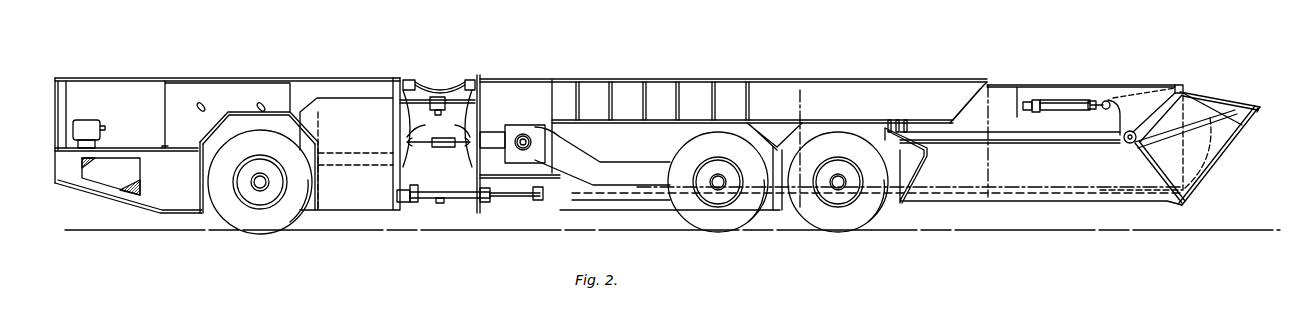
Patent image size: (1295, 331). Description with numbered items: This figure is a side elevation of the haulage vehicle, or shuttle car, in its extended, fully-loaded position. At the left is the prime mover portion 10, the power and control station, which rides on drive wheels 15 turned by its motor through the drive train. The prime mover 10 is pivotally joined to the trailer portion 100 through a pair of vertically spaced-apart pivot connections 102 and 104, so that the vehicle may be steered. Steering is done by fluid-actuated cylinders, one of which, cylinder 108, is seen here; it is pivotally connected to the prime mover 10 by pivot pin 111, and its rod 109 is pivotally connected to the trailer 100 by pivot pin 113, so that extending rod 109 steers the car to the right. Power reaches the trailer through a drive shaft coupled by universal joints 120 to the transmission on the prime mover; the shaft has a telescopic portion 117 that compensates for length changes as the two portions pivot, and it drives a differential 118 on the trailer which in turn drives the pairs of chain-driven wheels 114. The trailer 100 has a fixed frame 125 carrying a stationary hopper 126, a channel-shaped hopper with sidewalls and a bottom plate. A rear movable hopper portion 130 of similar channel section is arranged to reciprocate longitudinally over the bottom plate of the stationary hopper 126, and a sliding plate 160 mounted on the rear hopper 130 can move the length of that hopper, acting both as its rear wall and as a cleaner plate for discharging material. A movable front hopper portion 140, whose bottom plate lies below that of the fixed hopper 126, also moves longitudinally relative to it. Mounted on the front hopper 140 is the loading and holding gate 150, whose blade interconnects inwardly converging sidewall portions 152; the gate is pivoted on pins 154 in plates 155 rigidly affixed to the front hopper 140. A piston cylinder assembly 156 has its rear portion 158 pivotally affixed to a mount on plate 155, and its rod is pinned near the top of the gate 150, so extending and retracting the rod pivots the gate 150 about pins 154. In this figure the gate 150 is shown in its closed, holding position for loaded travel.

The prime mover portion 10 is at (164, 76).
The drive wheels 15 is at (259, 222).
The trailer portion 100 is at (624, 80).
The pivot connection 102 is at (440, 97).
The pivot connection 104 is at (440, 205).
The cylinder 108 is at (458, 200).
The rod 109 is at (404, 212).
The pivot pin 111 is at (508, 200).
The pivot pin 113 is at (538, 202).
The wheels 114 is at (813, 225).
The telescopic portion 117 is at (455, 148).
The differential 118 is at (509, 125).
The universal joints 120 is at (438, 126).
The fixed frame 125 is at (479, 80).
The stationary hopper 126 is at (912, 79).
The rear movable hopper portion 130 is at (800, 86).
The movable front hopper portion 140 is at (1000, 86).
The loading and holding gate 150 is at (1210, 94).
The inwardly converging sidewall portions 152 is at (1240, 130).
The pins 154 is at (1128, 144).
The plates 155 is at (1120, 92).
The piston cylinder assembly 156 is at (1047, 100).
The rear portion 158 is at (1021, 112).
The movable plate 160 is at (568, 90).